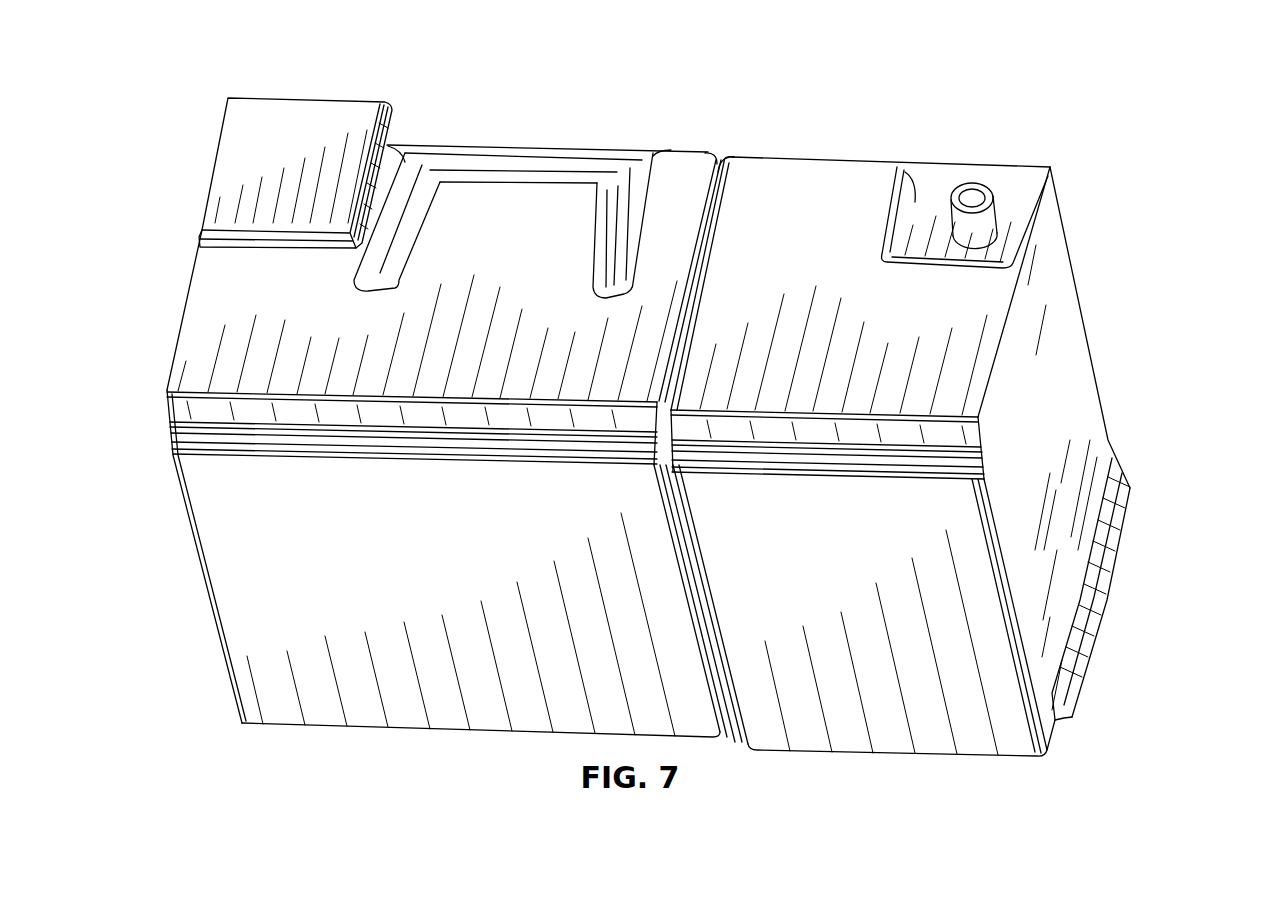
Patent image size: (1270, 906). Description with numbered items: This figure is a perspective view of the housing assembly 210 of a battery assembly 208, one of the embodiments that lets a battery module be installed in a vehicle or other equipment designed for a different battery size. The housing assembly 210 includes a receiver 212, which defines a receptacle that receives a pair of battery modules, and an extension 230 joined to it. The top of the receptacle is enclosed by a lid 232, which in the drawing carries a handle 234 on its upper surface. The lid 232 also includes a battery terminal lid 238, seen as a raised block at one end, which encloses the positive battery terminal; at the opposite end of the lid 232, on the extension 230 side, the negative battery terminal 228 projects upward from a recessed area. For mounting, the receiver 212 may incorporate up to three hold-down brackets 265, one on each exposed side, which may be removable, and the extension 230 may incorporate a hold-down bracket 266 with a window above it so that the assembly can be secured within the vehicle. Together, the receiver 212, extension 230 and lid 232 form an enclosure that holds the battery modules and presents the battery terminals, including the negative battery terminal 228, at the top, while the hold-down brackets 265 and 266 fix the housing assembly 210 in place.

The battery assembly 208 is at (1191, 130).
The housing assembly 210 is at (588, 146).
The receiver 212 is at (242, 636).
The negative battery terminal 228 is at (1000, 221).
The extension 230 is at (1050, 272).
The lid 232 is at (197, 310).
The handle 234 is at (524, 163).
The battery terminal lid 238 is at (310, 103).
The hold-down bracket 265 is at (232, 686).
The hold-down bracket 266 is at (1073, 615).